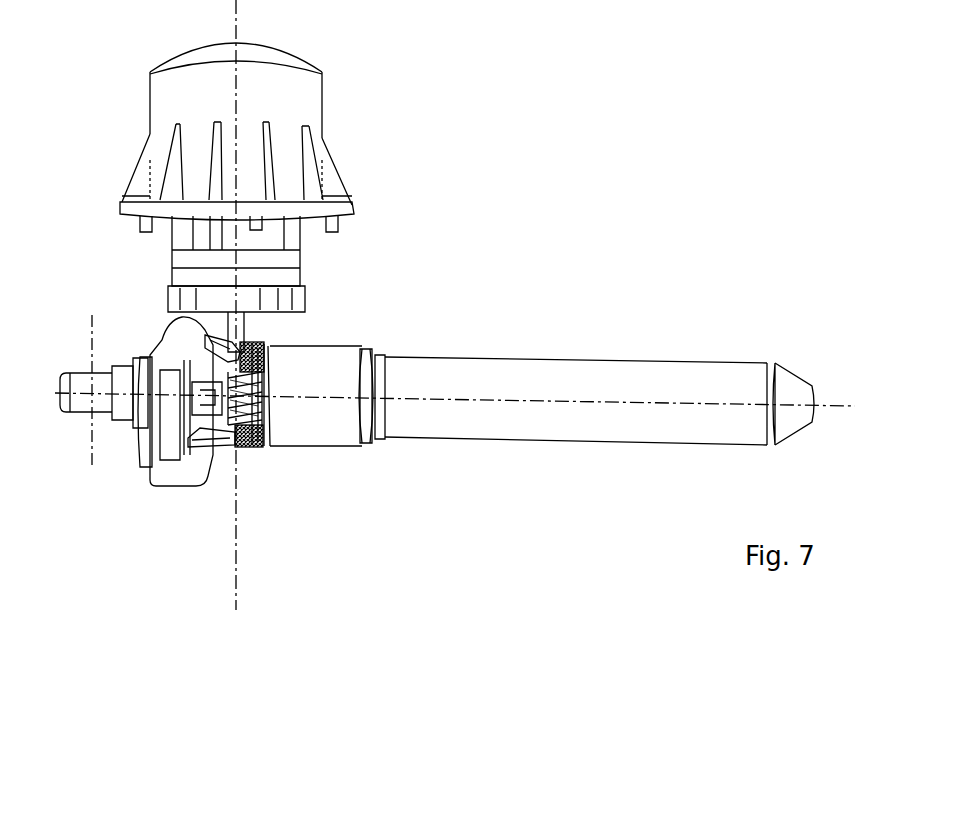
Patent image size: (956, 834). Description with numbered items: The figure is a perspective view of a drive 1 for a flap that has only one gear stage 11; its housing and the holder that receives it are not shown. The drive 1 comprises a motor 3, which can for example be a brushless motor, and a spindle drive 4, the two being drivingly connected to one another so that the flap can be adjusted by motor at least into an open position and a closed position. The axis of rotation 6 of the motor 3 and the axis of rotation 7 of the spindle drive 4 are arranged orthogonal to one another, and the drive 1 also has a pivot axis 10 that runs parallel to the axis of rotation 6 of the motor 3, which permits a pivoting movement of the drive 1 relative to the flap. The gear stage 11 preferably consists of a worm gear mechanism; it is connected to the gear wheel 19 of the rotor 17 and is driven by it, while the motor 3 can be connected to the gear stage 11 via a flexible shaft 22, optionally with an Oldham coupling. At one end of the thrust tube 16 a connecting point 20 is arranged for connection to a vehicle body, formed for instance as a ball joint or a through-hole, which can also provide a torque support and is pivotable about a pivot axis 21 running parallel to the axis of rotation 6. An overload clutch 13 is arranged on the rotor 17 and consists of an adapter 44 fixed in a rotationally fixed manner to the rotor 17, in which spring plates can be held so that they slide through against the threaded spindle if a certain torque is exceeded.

The drive 1 is at (578, 68).
The motor 3 is at (212, 103).
The spindle drive 4 is at (542, 399).
The axis of rotation of the motor 6 is at (333, 305).
The axis of rotation of the spindle drive 7 is at (849, 410).
The pivot axis 10 is at (236, 27).
The gear stage 11 is at (255, 442).
The overload clutch 13 is at (788, 365).
The thrust tube 16 is at (120, 405).
The rotor 17 is at (560, 367).
The gear wheel 19 is at (247, 445).
The connecting point 20 is at (75, 372).
The pivot axis of the connecting point 21 is at (92, 325).
The flexible shaft 22 is at (243, 338).
The adapter 44 is at (787, 366).